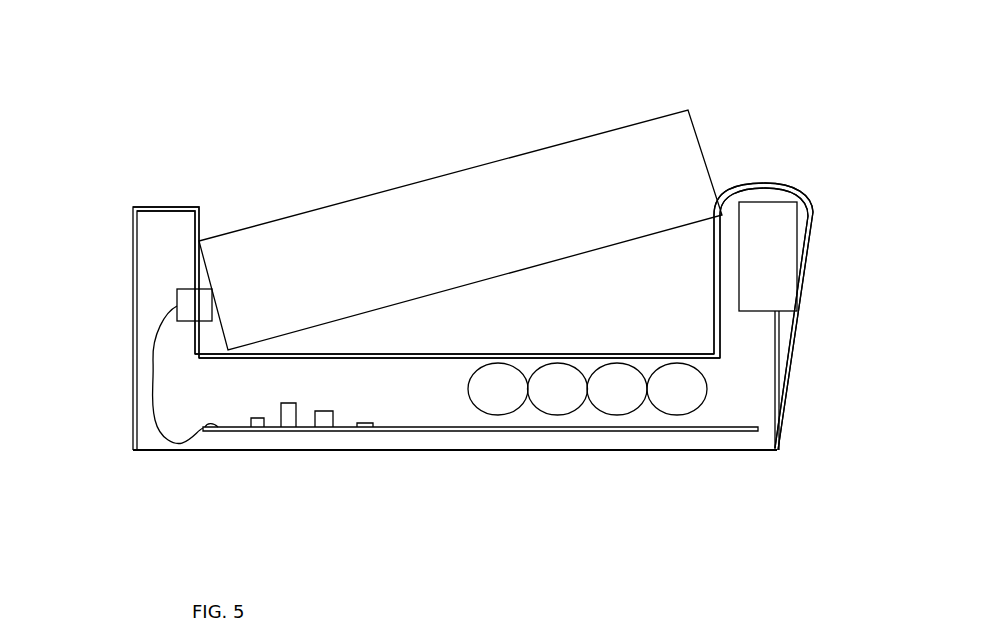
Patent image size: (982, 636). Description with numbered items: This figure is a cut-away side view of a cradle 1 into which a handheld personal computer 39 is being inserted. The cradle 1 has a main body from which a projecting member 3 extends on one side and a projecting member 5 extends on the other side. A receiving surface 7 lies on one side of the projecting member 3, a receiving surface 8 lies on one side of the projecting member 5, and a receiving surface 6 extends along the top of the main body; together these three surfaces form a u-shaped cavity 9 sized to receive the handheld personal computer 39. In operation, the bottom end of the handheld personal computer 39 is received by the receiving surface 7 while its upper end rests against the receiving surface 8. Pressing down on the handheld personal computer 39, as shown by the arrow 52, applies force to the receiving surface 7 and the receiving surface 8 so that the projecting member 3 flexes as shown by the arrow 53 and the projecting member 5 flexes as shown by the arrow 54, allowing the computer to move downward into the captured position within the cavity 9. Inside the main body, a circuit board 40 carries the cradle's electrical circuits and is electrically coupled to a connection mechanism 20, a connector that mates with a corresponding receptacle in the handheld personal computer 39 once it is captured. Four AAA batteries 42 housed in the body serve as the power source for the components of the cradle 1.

The cradle 1 is at (665, 452).
The projecting member 3 is at (100, 208).
The projecting member 5 is at (803, 355).
The receiving surface 6 is at (498, 351).
The receiving surface 7 is at (201, 225).
The receiving surface 8 is at (712, 271).
The cavity 9 is at (592, 296).
The connection mechanism 20 is at (182, 290).
The handheld personal computer 39 is at (628, 143).
The circuit board 40 is at (388, 426).
The batteries 42 is at (585, 433).
The arrow 52 is at (567, 109).
The arrow 53 is at (70, 189).
The arrow 54 is at (797, 160).